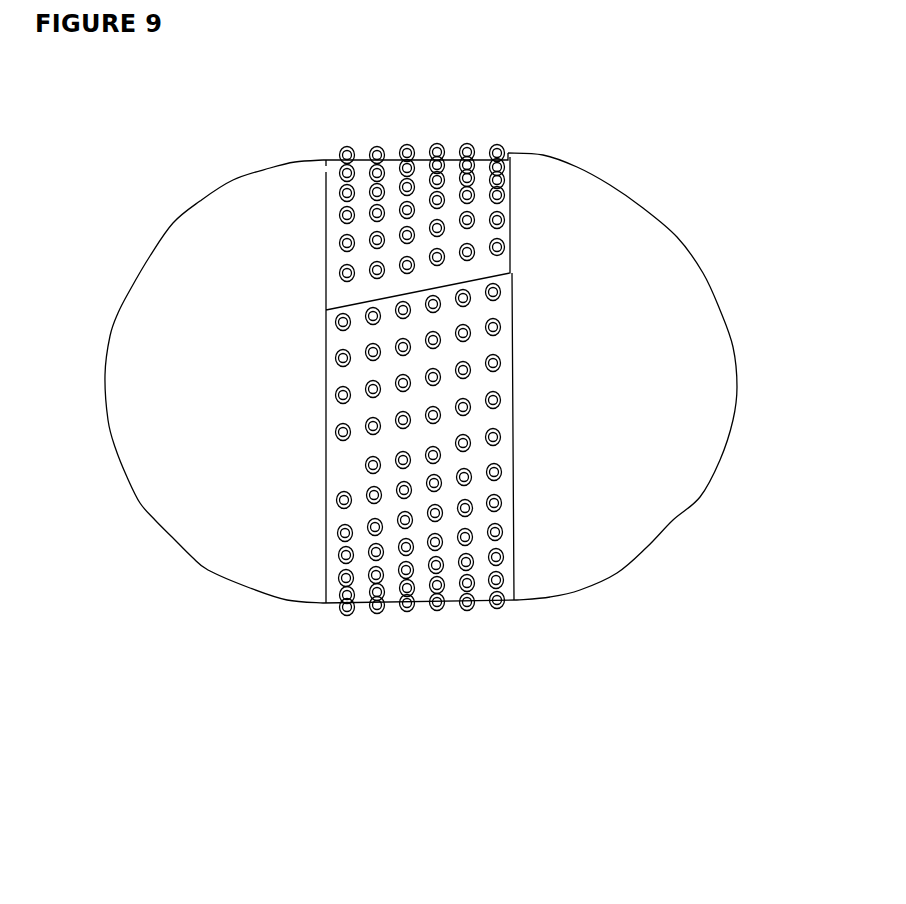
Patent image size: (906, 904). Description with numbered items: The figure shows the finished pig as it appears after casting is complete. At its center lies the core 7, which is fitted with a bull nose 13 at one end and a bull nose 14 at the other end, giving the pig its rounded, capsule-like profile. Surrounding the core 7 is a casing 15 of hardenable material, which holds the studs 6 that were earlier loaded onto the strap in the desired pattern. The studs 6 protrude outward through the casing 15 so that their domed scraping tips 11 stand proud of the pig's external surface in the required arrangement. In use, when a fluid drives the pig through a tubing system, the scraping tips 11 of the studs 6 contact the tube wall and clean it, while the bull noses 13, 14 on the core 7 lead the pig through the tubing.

The studs 6 is at (434, 452).
The core 7 is at (493, 415).
The domed scraping tip 11 is at (348, 485).
The bull nose 13 is at (207, 370).
The bull nose 14 is at (668, 407).
The casing 15 is at (437, 316).